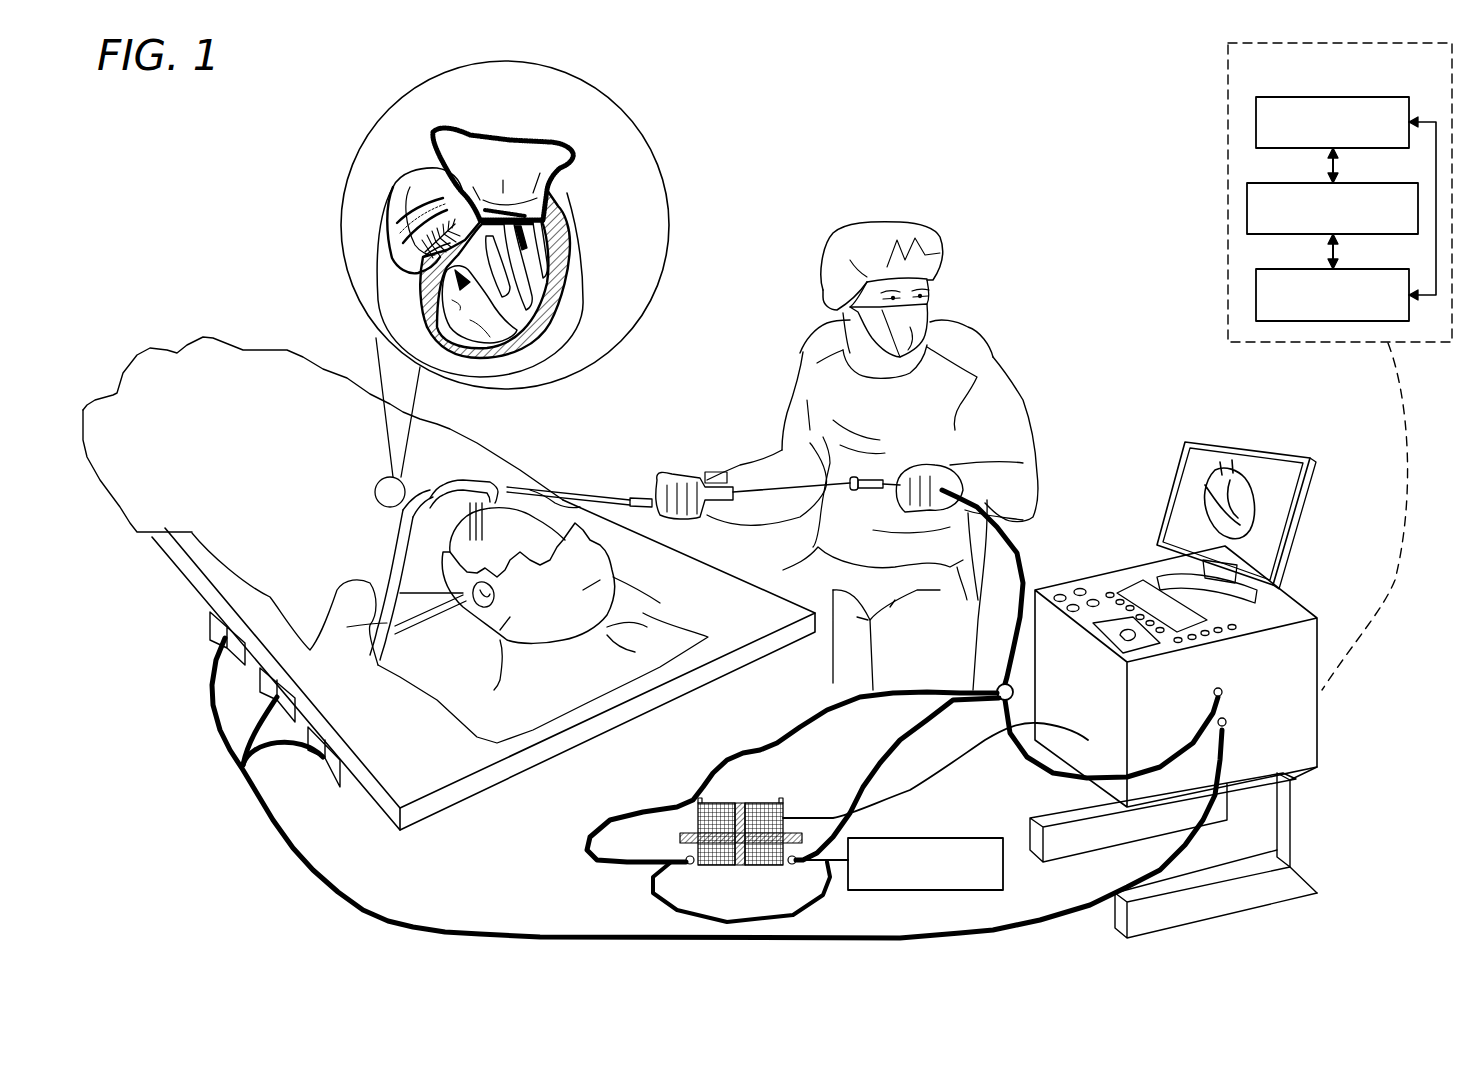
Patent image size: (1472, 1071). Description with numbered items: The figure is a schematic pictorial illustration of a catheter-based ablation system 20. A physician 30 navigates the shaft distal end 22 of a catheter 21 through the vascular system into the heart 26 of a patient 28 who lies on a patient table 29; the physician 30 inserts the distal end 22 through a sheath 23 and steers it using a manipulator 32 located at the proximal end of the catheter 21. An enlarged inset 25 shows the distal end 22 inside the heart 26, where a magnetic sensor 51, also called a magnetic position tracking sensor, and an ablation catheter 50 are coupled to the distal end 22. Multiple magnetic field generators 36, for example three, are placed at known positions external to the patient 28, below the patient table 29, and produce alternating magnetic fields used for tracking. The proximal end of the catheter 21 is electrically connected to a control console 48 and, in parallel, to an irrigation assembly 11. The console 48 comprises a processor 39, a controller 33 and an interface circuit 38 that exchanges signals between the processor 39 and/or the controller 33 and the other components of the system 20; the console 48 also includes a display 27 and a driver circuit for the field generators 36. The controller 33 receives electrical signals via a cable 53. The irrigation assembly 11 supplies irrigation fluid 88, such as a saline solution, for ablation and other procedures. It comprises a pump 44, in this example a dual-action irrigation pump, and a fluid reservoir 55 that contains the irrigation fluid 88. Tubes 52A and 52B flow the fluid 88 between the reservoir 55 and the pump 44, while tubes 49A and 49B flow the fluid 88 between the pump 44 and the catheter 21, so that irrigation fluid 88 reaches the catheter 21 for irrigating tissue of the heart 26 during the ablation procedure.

The catheter-based ablation system 20 is at (232, 138).
The irrigation assembly 11 is at (338, 910).
The catheter 21 is at (800, 470).
The shaft distal end 22 is at (410, 220).
The sheath 23 is at (616, 490).
The inset 25 is at (338, 220).
The heart 26 is at (575, 258).
The display 27 is at (1243, 445).
The patient 28 is at (395, 540).
The patient table 29 is at (614, 720).
The physician 30 is at (826, 265).
The manipulator 32 is at (895, 480).
The controller 33 is at (1247, 213).
The magnetic field generators 36 is at (222, 638).
The interface circuit 38 is at (1256, 125).
The processor 39 is at (1256, 298).
The pump 44 is at (690, 859).
The control console 48 is at (1228, 85).
The tube 49A is at (853, 790).
The tube 49B is at (758, 748).
The ablation catheter 50 is at (447, 195).
The magnetic sensor 51 is at (437, 213).
The tube 52A is at (813, 865).
The tube 52B is at (656, 900).
The cable 53 is at (826, 821).
The fluid reservoir 55 is at (1036, 878).
The irrigation fluid 88 is at (988, 838).